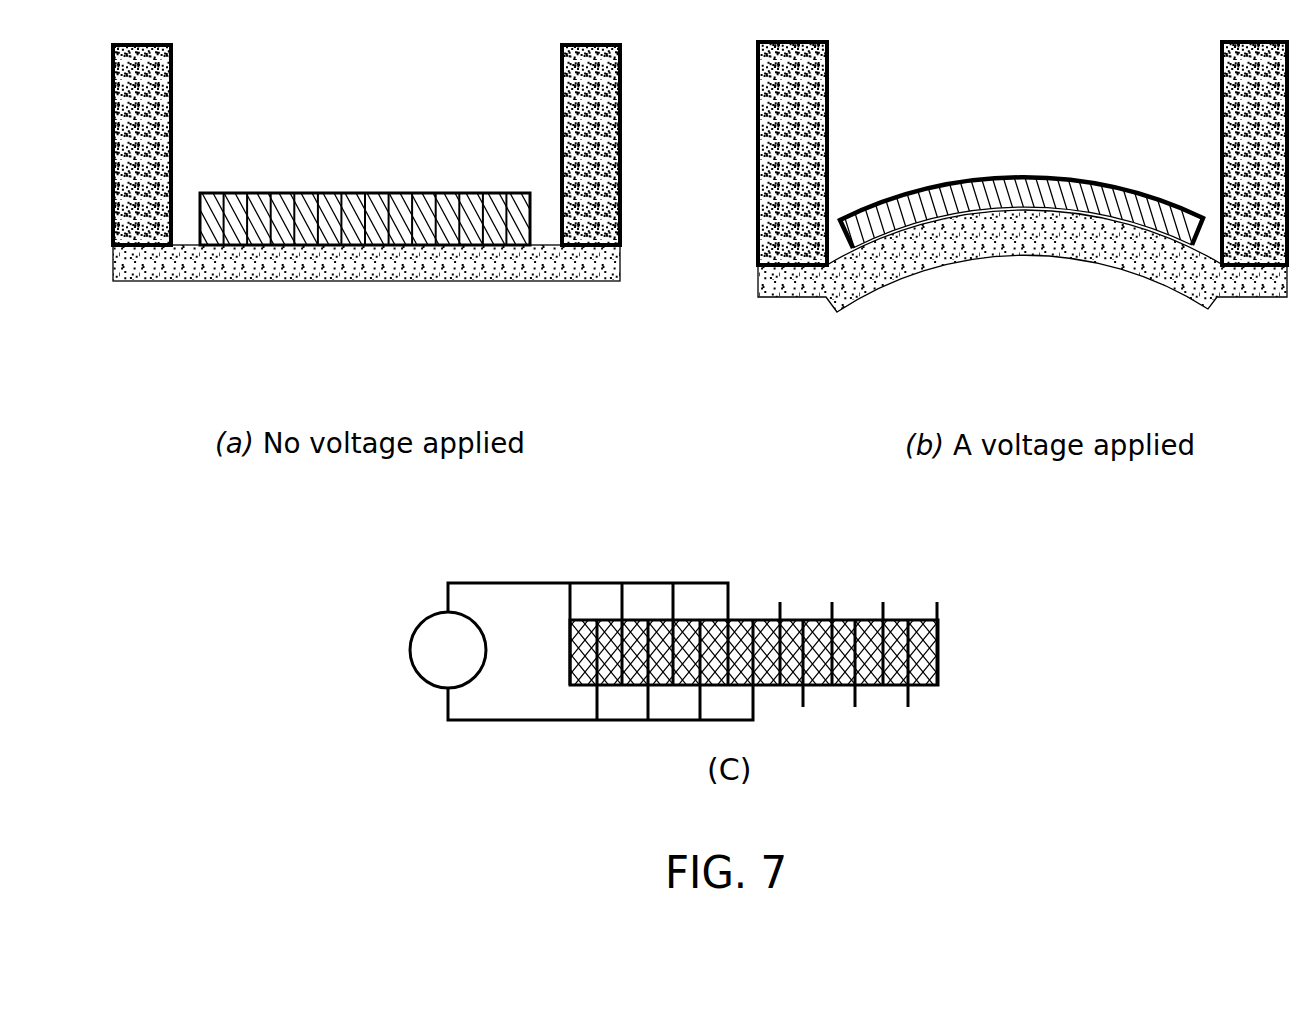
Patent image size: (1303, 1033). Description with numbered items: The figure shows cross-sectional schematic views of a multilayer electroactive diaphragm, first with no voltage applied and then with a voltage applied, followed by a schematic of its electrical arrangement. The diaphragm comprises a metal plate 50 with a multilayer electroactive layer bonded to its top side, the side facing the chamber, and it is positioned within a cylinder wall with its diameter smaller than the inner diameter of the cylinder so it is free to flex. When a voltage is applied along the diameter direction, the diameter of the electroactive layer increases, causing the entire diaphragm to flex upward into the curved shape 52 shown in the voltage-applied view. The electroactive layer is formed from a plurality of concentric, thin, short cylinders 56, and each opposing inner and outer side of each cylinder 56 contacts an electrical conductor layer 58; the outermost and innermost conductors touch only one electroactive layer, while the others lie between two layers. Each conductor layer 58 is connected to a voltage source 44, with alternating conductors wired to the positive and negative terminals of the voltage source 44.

The metal plate 50 is at (205, 280).
The deformed substrate layer 52 is at (965, 260).
The cylinder 56 is at (858, 627).
The electrical conductor layer 58 is at (730, 603).
The voltage source 44 is at (425, 617).